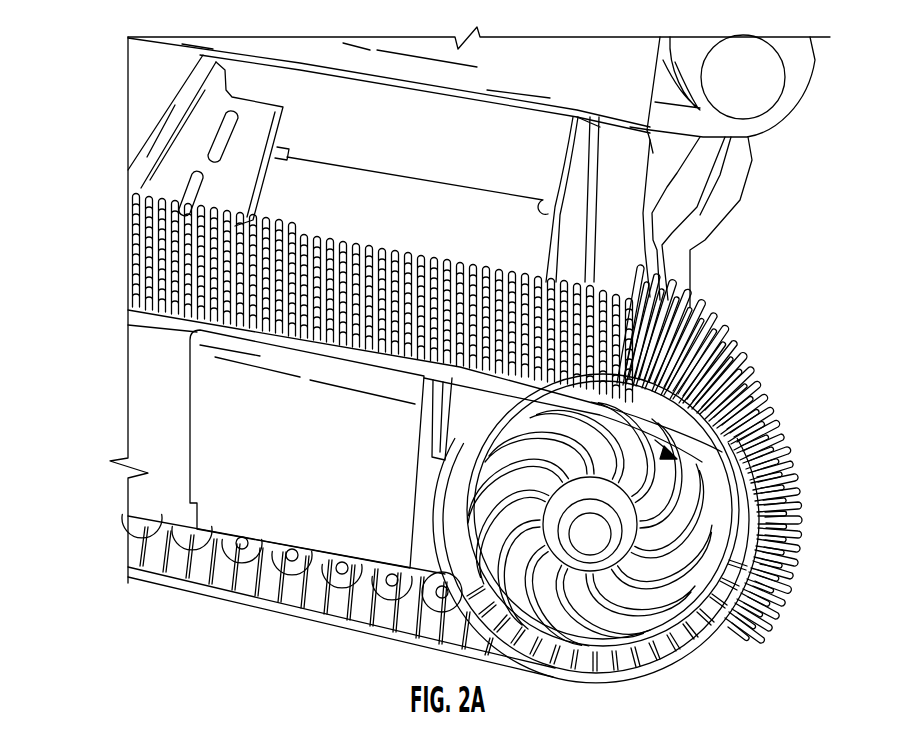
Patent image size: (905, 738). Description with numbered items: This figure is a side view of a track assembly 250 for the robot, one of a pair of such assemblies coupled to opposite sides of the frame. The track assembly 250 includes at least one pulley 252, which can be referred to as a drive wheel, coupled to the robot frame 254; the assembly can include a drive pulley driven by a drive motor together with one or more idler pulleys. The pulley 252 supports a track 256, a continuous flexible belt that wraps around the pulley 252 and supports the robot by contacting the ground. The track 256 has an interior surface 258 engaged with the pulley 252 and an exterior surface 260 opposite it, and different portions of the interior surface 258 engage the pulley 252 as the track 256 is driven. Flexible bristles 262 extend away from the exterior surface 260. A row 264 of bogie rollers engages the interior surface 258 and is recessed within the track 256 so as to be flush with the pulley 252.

The track assembly 250 is at (117, 246).
The pulley 252 is at (780, 425).
The robot frame 254 is at (419, 226).
The track 256 is at (533, 331).
The interior surface 258 is at (528, 408).
The exterior surface 260 is at (743, 378).
The flexible bristles 262 is at (431, 305).
The row of bogie rollers 264 is at (476, 573).